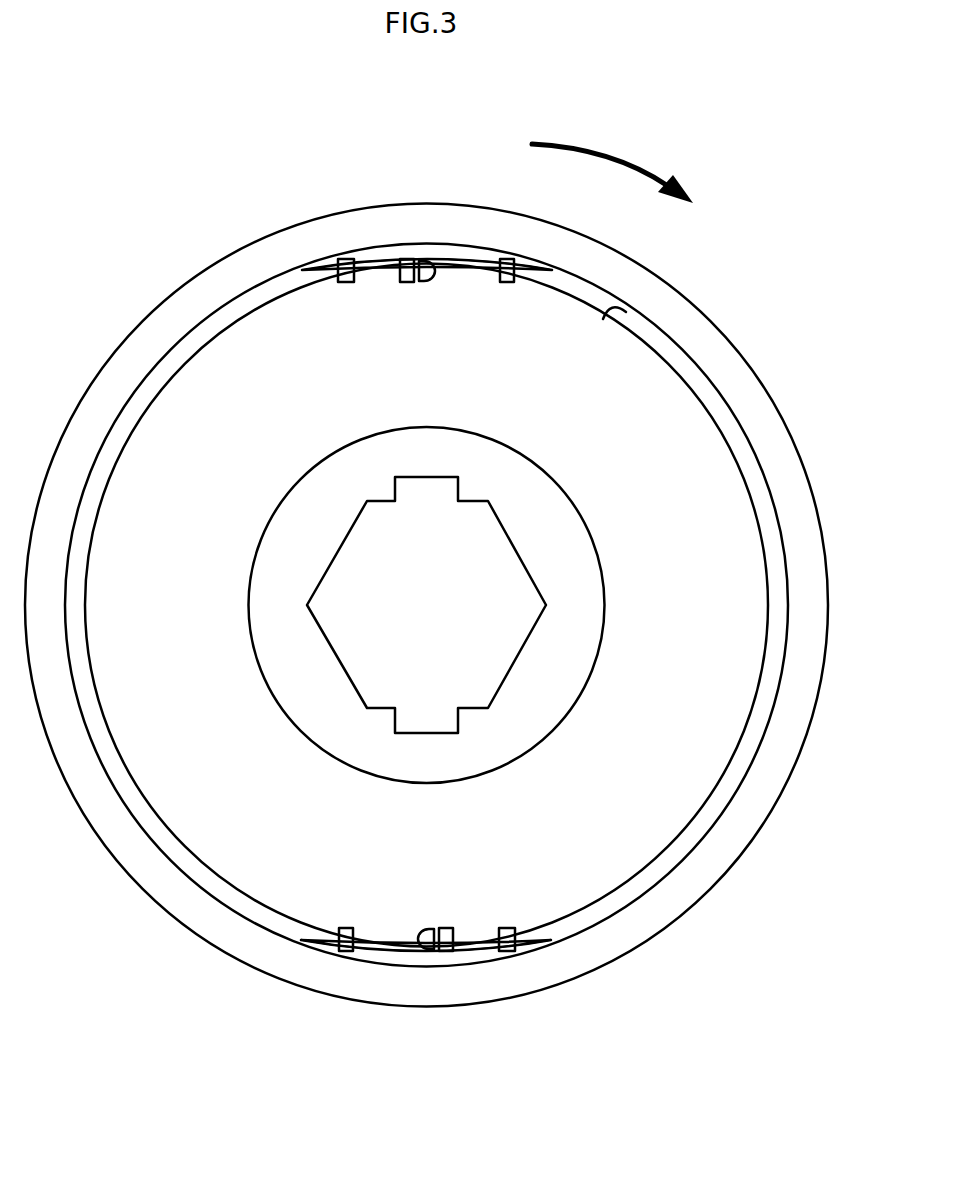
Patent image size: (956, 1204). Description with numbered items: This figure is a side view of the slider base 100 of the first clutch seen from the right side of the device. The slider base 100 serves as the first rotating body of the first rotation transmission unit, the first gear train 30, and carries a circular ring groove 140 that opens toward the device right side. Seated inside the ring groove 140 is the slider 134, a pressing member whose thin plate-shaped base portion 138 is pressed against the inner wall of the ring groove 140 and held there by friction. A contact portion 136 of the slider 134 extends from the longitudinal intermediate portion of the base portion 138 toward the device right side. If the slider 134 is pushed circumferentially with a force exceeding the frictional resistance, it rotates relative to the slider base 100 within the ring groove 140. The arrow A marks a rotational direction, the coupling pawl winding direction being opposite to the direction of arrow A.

The first gear train 30 is at (739, 255).
The slider base 100 is at (748, 356).
The slider 134 is at (453, 252).
The contact portion 136 is at (442, 283).
The base portion 138 is at (482, 262).
The ring groove 140 is at (625, 320).
The arrow A is at (608, 152).